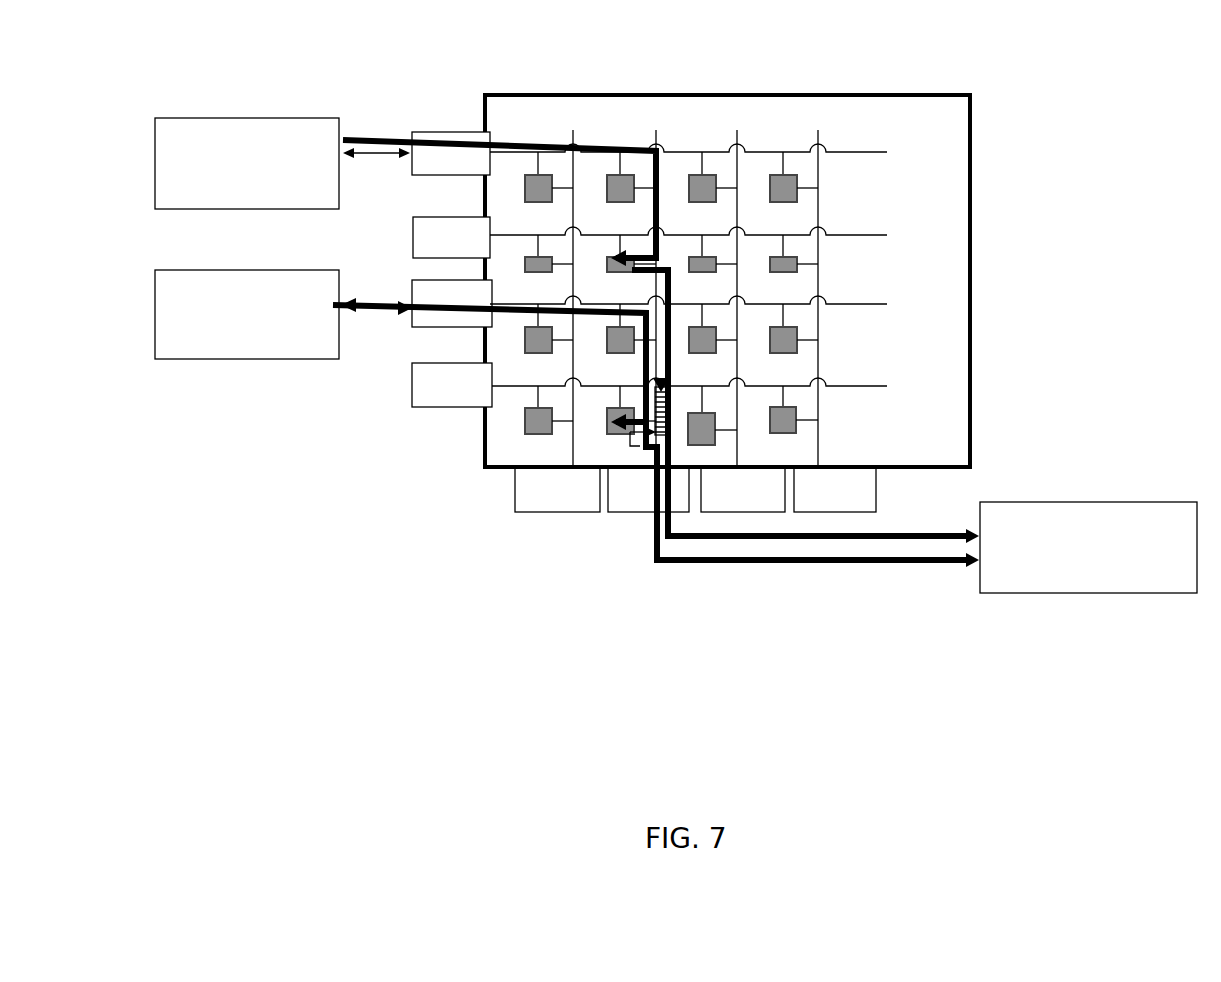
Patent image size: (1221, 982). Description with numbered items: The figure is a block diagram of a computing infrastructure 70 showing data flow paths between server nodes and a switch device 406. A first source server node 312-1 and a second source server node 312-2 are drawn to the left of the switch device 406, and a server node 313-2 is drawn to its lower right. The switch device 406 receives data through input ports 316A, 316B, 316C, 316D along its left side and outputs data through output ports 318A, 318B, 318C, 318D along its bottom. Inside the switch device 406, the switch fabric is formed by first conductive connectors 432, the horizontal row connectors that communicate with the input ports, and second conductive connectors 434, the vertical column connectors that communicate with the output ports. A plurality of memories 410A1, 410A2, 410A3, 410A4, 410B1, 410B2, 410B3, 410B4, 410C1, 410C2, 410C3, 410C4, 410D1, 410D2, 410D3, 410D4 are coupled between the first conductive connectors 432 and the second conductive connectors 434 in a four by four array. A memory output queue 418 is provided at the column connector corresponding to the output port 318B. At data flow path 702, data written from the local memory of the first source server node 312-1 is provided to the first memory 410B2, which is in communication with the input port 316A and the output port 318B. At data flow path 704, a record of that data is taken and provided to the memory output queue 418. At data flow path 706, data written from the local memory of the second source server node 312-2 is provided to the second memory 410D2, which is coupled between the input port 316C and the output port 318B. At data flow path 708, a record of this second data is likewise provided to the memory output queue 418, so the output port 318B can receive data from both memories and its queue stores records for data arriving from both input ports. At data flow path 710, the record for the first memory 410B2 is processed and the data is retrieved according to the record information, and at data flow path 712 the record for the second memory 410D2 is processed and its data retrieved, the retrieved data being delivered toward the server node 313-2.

The computing infrastructure 70 is at (988, 68).
The switch device 406 is at (937, 137).
The first source server node 312-1 is at (247, 163).
The second source server node 312-2 is at (247, 314).
The server node 313-2 is at (1088, 547).
The input port 316A is at (451, 153).
The input port 316B is at (451, 237).
The input port 316C is at (452, 303).
The input port 316D is at (452, 385).
The output port 318A is at (557, 490).
The output port 318B is at (648, 490).
The output port 318C is at (743, 490).
The output port 318D is at (835, 490).
The memory 410A1 is at (527, 186).
The memory 410A2 is at (609, 186).
The memory 410A3 is at (691, 186).
The memory 410A4 is at (772, 186).
The memory 410B1 is at (527, 272).
The first memory 410B2 is at (609, 272).
The memory 410B3 is at (691, 272).
The memory 410B4 is at (772, 272).
The memory 410C1 is at (527, 338).
The memory 410C2 is at (609, 338).
The memory 410C3 is at (691, 338).
The memory 410C4 is at (772, 338).
The memory 410D1 is at (527, 419).
The second memory 410D2 is at (609, 419).
The memory 410D3 is at (712, 424).
The memory 410D4 is at (785, 424).
The memory output queue 418 is at (683, 432).
The first conductive connectors 432 is at (697, 147).
The second conductive connectors 434 is at (818, 213).
The data flow path 702 is at (383, 141).
The data flow path 704 is at (670, 320).
The data flow path 706 is at (372, 306).
The data flow path 708 is at (638, 455).
The data flow path 710 is at (772, 563).
The data flow path 712 is at (898, 536).